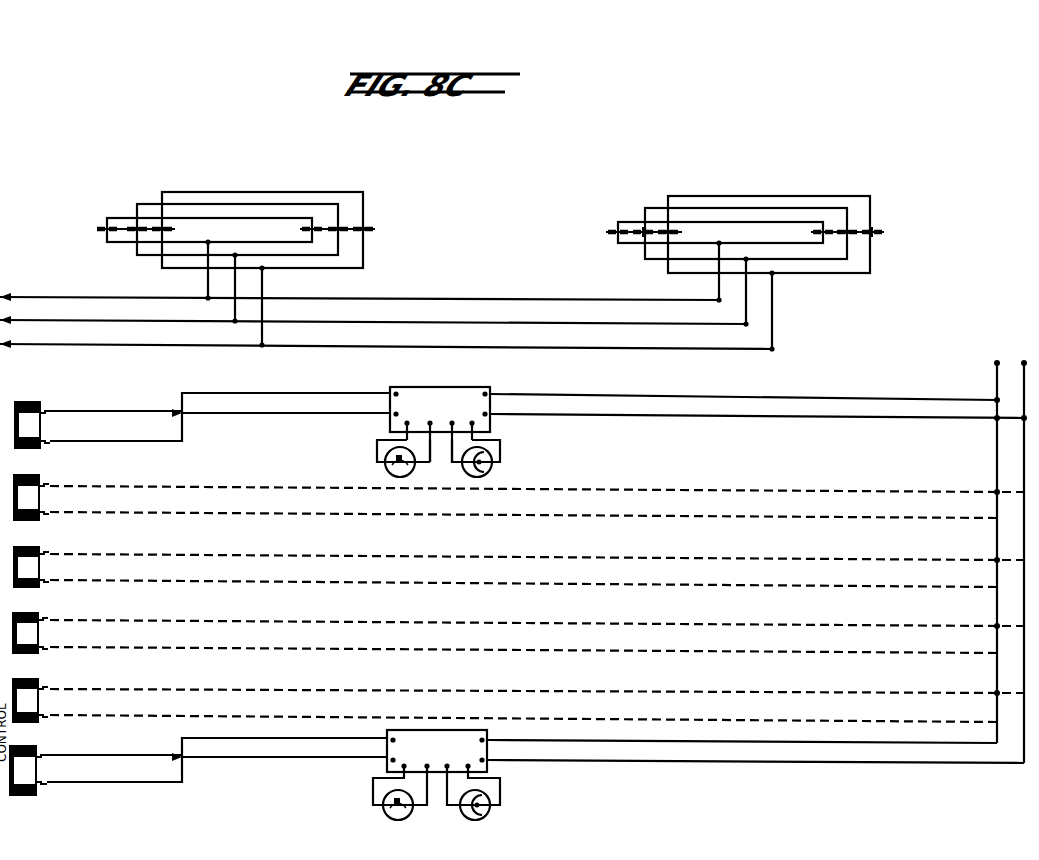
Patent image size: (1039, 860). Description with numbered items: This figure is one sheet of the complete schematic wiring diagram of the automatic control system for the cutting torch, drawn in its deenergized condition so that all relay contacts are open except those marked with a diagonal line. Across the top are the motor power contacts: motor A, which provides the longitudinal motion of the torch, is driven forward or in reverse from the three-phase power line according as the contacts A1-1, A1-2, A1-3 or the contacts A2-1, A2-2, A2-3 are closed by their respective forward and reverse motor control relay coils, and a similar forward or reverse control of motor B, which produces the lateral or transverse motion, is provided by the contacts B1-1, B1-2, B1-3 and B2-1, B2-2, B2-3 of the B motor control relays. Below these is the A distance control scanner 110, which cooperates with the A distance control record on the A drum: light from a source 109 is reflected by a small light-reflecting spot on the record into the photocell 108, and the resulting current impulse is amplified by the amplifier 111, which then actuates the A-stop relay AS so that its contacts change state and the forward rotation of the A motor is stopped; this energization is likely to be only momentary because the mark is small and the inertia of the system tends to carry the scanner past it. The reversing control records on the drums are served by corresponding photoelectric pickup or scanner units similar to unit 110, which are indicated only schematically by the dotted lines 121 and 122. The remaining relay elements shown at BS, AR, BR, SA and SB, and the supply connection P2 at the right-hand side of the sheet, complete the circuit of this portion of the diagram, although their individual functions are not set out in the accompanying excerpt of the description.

The photocell 108 is at (491, 466).
The light source 109 is at (386, 466).
The A distance control scanner 110 is at (551, 448).
The amplifier 111 is at (450, 387).
The reversing scanner unit 121 is at (456, 558).
The reversing scanner unit 122 is at (456, 625).
The relay contact A1-1 is at (102, 227).
The relay contact A1-2 is at (130, 232).
The relay contact A1-3 is at (178, 228).
The relay contact A2-1 is at (302, 231).
The relay contact A2-2 is at (346, 228).
The relay contact A2-3 is at (364, 232).
The relay contact B1-1 is at (612, 230).
The relay contact B1-2 is at (642, 234).
The relay contact B1-3 is at (686, 231).
The relay contact B2-1 is at (811, 234).
The relay contact B2-2 is at (858, 232).
The relay contact B2-3 is at (877, 237).
The connector BS is at (39, 402).
The A-stop relay AS is at (42, 475).
The connector AR is at (41, 552).
The connector BR is at (41, 618).
The connector SA is at (41, 685).
The connector SB is at (42, 747).
The power source P2 is at (1010, 553).